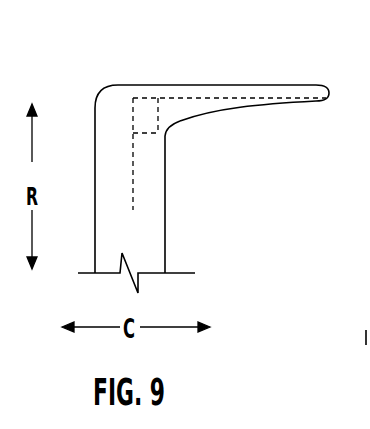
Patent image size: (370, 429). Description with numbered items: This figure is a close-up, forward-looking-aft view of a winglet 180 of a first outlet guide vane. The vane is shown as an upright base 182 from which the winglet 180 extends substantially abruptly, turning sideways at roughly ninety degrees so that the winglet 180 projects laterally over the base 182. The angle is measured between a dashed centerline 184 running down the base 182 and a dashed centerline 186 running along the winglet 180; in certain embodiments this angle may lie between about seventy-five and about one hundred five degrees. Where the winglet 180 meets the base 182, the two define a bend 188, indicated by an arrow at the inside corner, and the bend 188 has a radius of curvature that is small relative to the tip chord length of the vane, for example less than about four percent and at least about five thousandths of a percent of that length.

The winglet 180 is at (260, 85).
The base 182 is at (167, 240).
The centerline 184 is at (167, 171).
The centerline 186 is at (215, 84).
The bend 188 is at (181, 141).